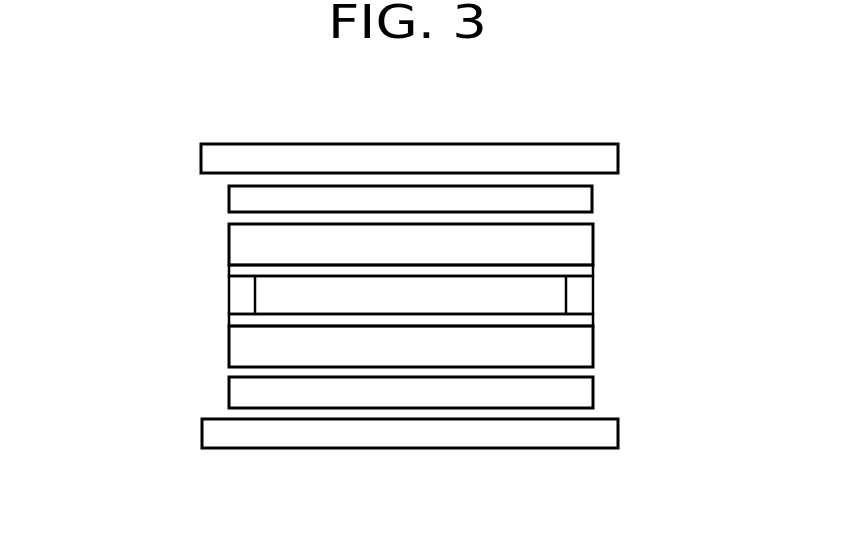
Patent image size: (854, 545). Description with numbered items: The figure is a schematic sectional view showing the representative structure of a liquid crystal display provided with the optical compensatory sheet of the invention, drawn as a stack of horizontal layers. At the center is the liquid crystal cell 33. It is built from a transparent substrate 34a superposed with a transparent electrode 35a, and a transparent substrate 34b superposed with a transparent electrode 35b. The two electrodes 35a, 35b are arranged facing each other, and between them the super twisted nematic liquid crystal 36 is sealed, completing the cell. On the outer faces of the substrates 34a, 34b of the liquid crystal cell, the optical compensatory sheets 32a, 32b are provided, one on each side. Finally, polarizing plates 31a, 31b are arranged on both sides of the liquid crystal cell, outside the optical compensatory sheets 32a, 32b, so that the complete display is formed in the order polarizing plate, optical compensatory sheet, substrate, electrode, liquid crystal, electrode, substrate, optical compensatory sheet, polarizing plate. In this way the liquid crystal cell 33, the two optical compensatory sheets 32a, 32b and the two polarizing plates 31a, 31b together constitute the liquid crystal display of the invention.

The polarizing plate 31a is at (603, 432).
The polarizing plate 31b is at (600, 156).
The optical compensatory sheet 32a is at (233, 392).
The optical compensatory sheet 32b is at (233, 193).
The liquid crystal cell 33 is at (398, 277).
The transparent substrate 34a is at (573, 342).
The transparent substrate 34b is at (567, 243).
The transparent electrode 35a is at (238, 321).
The transparent electrode 35b is at (238, 271).
The super twisted nematic liquid crystal 36 is at (540, 298).